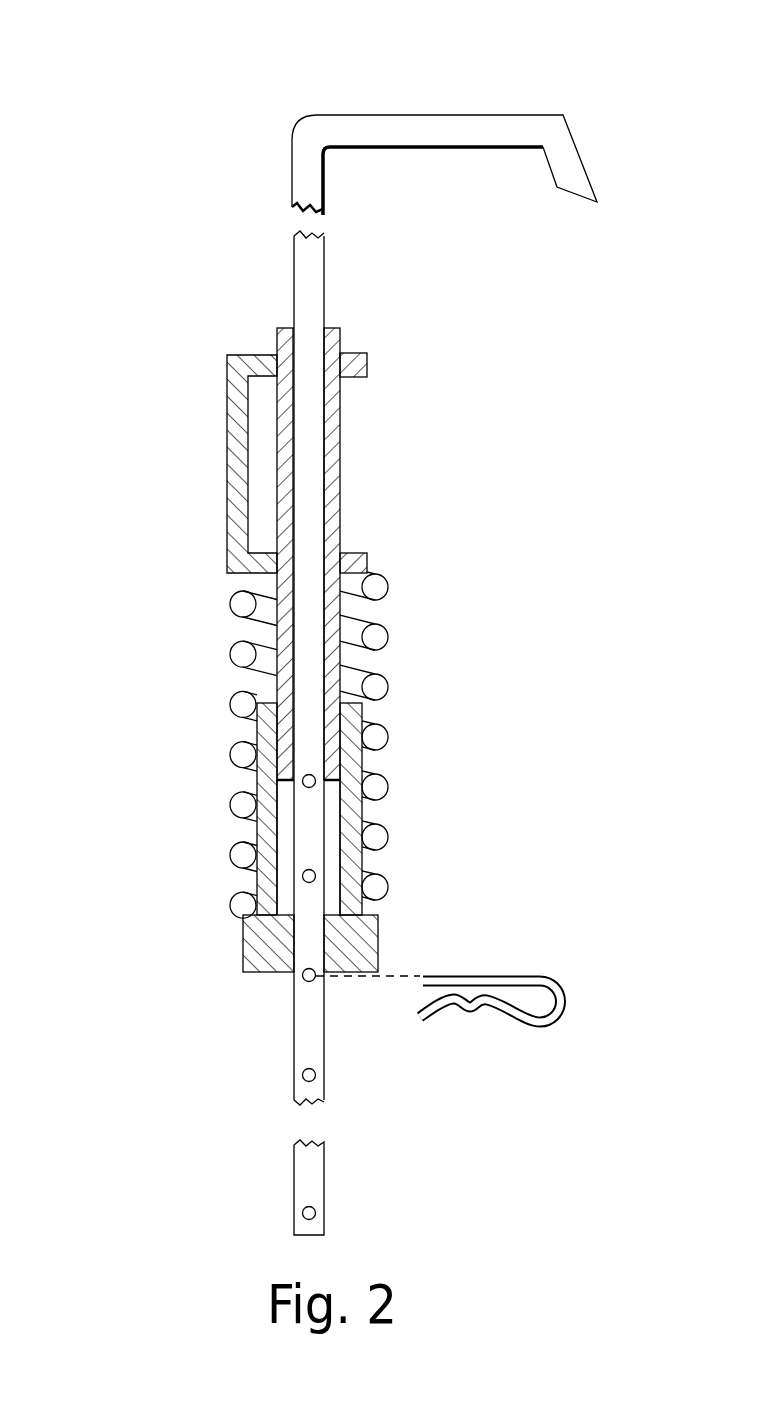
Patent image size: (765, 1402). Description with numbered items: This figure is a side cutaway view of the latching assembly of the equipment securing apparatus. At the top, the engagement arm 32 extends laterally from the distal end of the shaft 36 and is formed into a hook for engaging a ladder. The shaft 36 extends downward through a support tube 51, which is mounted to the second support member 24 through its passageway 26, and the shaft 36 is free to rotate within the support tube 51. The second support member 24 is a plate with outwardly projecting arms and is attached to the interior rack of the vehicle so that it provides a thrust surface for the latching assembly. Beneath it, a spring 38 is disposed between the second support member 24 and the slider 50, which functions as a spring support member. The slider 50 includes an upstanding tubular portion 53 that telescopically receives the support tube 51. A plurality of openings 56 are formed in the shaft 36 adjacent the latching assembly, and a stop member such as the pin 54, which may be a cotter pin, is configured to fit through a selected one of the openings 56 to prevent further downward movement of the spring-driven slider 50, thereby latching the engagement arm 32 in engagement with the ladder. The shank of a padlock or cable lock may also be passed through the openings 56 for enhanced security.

The second support member 24 is at (226, 460).
The passageway 26 is at (275, 352).
The engagement arm 32 is at (380, 128).
The shaft 36 is at (336, 1010).
The spring 38 is at (378, 638).
The slider 50 is at (283, 972).
The support tube 51 is at (330, 655).
The upstanding tubular portion 53 is at (262, 796).
The pin 54 is at (460, 975).
The openings 56 is at (301, 1076).